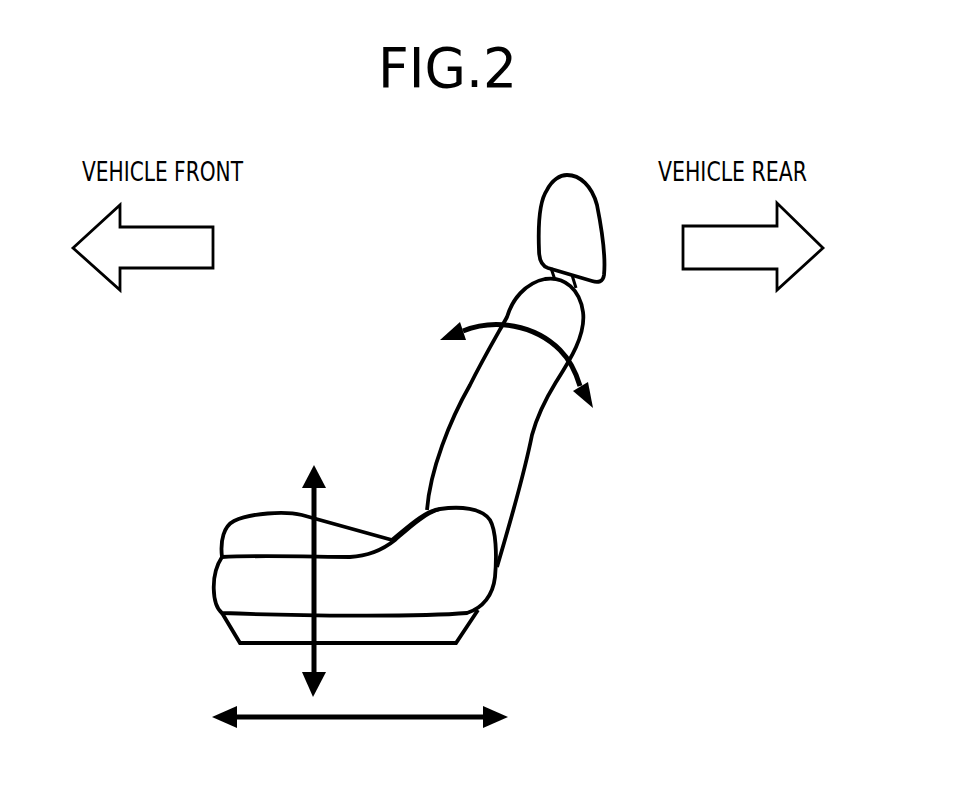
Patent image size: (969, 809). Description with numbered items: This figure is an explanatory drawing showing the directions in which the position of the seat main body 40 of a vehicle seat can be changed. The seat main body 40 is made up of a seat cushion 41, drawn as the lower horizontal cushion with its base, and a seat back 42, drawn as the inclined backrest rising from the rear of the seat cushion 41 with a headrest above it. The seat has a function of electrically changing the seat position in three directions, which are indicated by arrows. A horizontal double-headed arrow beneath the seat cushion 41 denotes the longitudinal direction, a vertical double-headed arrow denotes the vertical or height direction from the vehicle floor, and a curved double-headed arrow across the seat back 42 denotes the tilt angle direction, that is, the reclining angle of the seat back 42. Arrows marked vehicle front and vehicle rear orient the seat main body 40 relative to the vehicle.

The seat main body 40 is at (501, 451).
The seat cushion 41 is at (467, 577).
The seat back 42 is at (535, 432).